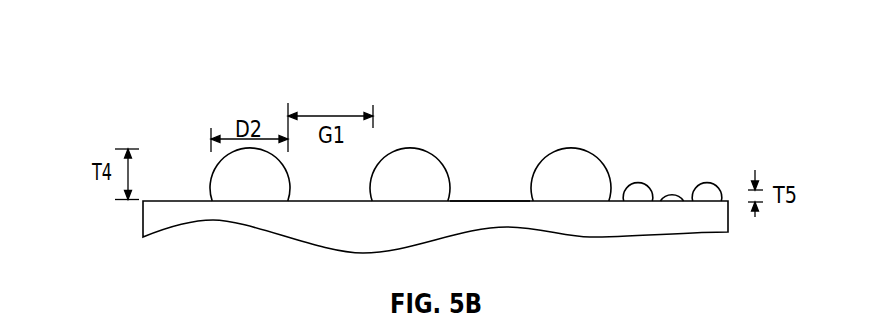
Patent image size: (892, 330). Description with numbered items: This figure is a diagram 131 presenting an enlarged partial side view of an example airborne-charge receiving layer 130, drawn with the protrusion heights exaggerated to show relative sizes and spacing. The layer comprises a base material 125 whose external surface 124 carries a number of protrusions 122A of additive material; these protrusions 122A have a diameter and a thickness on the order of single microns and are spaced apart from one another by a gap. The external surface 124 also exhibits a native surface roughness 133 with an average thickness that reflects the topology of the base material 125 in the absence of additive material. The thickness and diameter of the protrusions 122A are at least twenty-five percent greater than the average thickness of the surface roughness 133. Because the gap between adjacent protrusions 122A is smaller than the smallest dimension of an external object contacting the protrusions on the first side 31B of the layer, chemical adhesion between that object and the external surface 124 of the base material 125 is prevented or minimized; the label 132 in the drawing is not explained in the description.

The airborne-charge receiving layer 130 is at (143, 221).
The diagram 131 is at (121, 100).
The external surface 124 is at (493, 199).
The protrusions 122A is at (571, 148).
The surface roughness 133 is at (638, 190).
The second microstructure region 132 is at (692, 170).
The base material 125 is at (608, 223).
The first side 31B is at (468, 150).